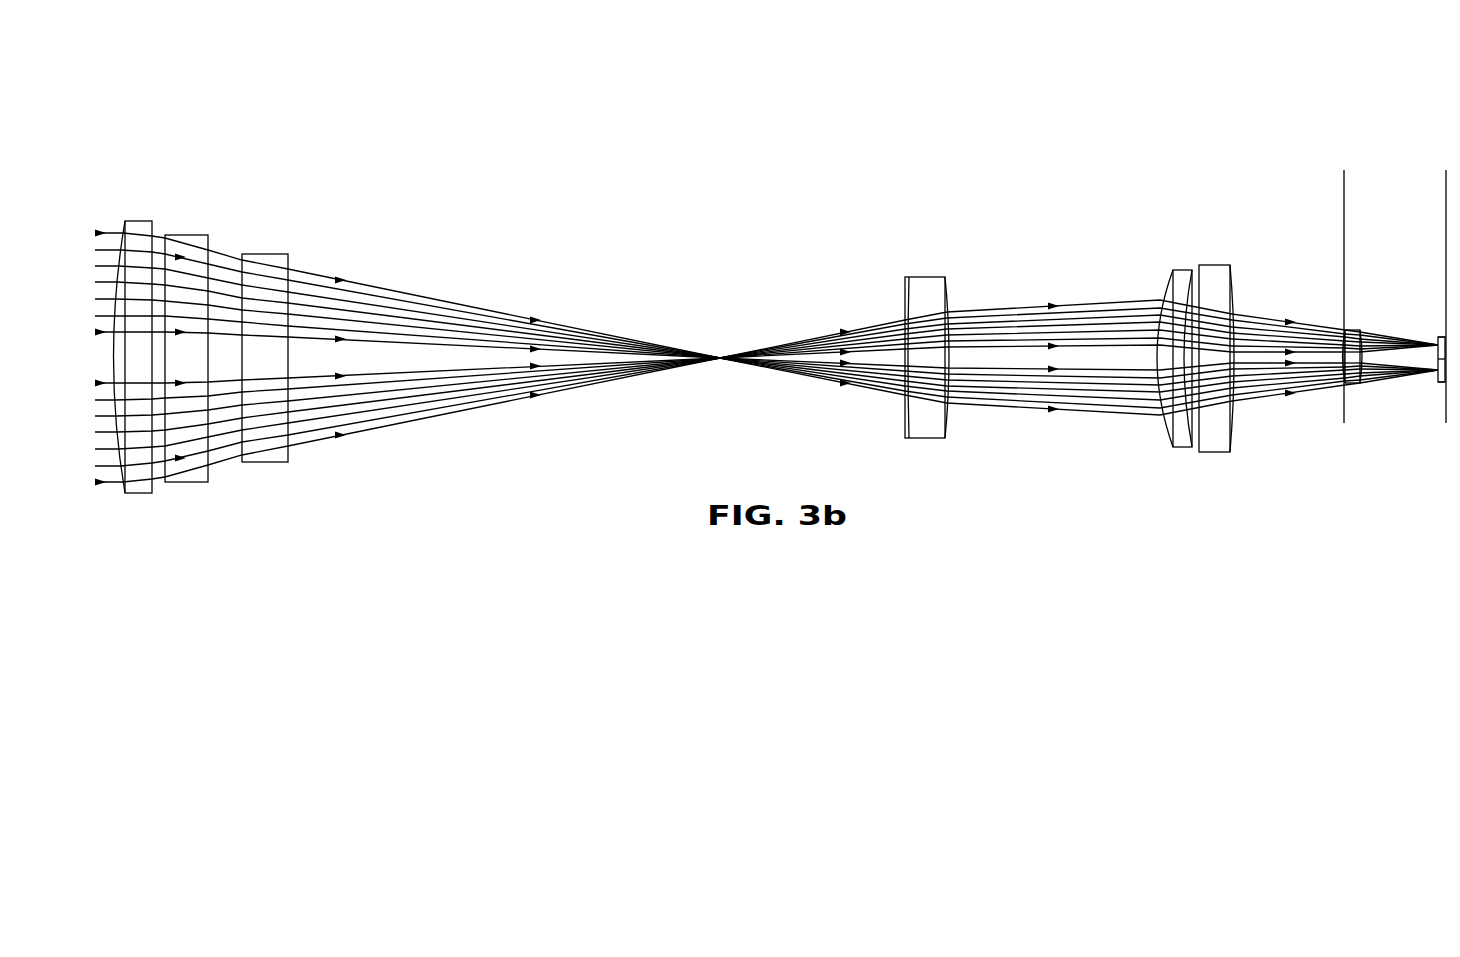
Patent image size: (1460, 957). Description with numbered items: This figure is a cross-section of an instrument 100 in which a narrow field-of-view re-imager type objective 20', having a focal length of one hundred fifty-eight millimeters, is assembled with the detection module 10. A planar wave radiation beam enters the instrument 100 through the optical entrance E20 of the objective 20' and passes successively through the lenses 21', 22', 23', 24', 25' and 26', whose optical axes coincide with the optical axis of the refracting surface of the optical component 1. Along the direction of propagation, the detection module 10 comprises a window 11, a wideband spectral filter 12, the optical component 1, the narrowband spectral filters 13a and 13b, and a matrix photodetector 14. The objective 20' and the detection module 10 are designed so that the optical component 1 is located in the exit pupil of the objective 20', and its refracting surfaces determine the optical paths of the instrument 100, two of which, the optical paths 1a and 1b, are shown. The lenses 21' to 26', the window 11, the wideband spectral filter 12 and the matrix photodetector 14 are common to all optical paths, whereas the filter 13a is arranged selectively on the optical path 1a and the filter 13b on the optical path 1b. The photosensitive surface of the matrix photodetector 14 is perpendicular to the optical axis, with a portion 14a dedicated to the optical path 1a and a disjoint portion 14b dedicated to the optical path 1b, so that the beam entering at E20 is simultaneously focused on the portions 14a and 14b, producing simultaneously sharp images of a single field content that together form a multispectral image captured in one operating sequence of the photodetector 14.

The instrument 100 is at (262, 90).
The narrow field-of-view re-imager type objective 20' is at (726, 305).
The detection module 10 is at (1446, 170).
The lens 21' is at (140, 325).
The lens 22' is at (191, 327).
The lens 23' is at (270, 327).
The lens 24' is at (923, 327).
The lens 25' is at (1175, 327).
The lens 26' is at (1221, 328).
The optical path 1a is at (1276, 297).
The optical path 1b is at (1274, 410).
The optical component 1 is at (1360, 387).
The window 11 is at (1346, 387).
The wideband spectral filter 12 is at (1353, 329).
The narrowband spectral filter 13a is at (1363, 328).
The narrowband spectral filter 13b is at (1363, 386).
The matrix photodetector 14 is at (1446, 383).
The portion of the photosensitive surface 14a is at (1442, 337).
The portion of the photosensitive surface 14b is at (1444, 383).
The optical entrance E20 is at (109, 505).